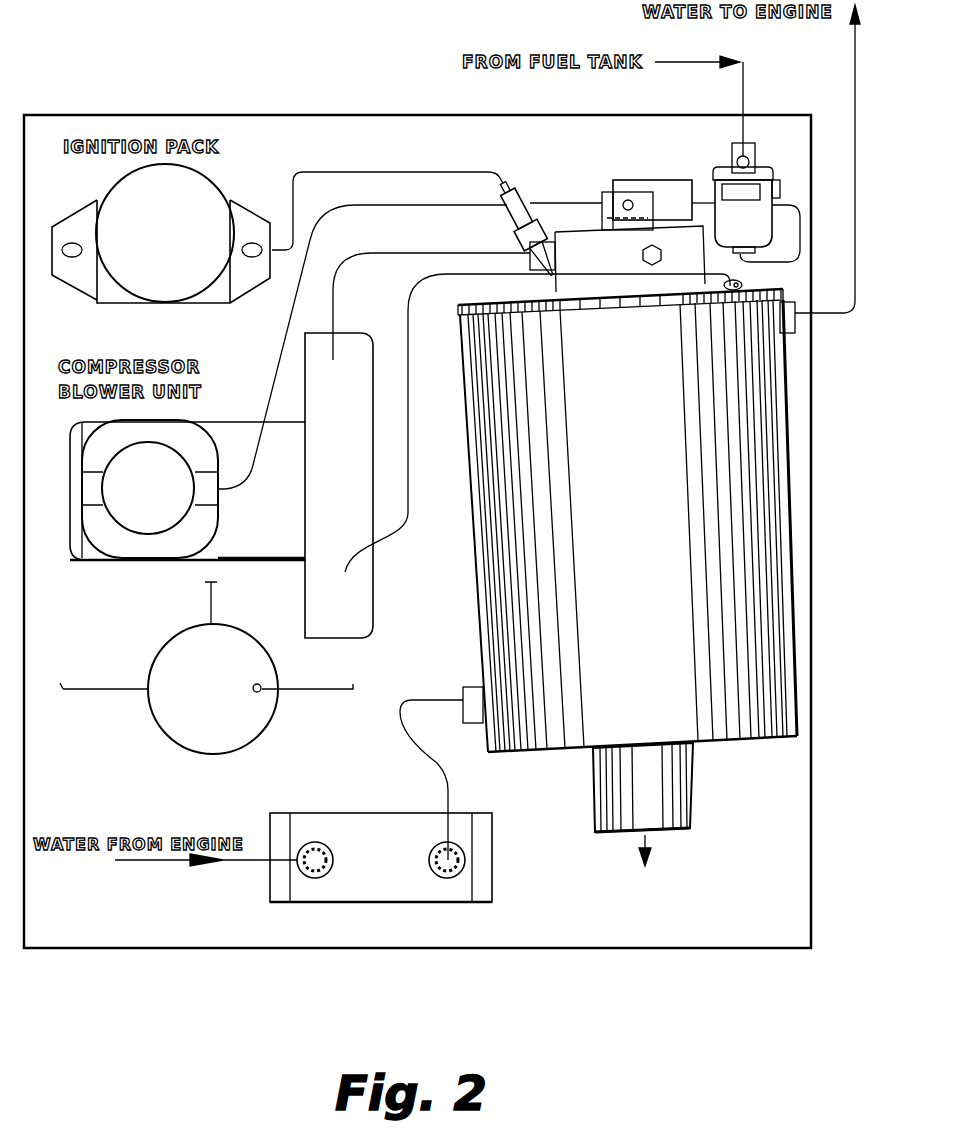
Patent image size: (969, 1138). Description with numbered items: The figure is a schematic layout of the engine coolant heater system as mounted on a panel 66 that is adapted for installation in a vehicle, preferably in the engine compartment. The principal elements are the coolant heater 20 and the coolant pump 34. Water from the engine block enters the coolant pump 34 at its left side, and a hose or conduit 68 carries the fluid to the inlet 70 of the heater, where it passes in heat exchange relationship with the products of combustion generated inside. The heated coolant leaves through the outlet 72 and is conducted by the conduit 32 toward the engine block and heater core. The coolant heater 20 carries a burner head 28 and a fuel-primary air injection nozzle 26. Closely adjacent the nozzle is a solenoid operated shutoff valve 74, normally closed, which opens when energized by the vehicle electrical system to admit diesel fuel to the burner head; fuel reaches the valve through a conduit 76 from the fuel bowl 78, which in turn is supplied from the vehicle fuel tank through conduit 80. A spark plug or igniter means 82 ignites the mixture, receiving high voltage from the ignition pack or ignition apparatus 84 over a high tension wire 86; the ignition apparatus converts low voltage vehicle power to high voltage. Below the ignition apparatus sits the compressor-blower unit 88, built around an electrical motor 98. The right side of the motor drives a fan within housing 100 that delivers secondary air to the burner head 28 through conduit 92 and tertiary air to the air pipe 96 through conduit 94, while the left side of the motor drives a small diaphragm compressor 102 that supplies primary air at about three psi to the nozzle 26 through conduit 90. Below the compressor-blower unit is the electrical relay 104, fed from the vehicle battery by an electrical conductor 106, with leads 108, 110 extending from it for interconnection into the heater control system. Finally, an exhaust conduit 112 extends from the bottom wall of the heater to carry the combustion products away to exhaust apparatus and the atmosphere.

The coolant heater 20 is at (755, 748).
The fuel-primary air injection nozzle 26 is at (602, 194).
The burner head 28 is at (598, 300).
The conduit 32 is at (833, 314).
The coolant pump 34 is at (330, 806).
The panel 66 is at (442, 458).
The hose or conduit 68 is at (432, 750).
The inlet 70 is at (470, 686).
The outlet 72 is at (788, 335).
The solenoid operated shutoff valve 74 is at (672, 187).
The conduit 76 is at (802, 222).
The fuel bowl 78 is at (772, 195).
The conduit 80 is at (743, 90).
The spark plug or igniter means 82 is at (512, 210).
The ignition pack or ignition apparatus 84 is at (232, 189).
The high tension wire 86 is at (425, 172).
The compressor-blower unit 88 is at (226, 426).
The conduit 90 is at (413, 207).
The conduit 92 is at (395, 257).
The conduit 94 is at (408, 357).
The air pipe 96 is at (706, 292).
The electrical motor 98 is at (280, 540).
The housing 100 is at (373, 606).
The compressor 102 is at (137, 517).
The electrical relay 104 is at (193, 754).
The electrical conductor 106 is at (98, 690).
The lead 108 is at (335, 688).
The lead 110 is at (210, 604).
The exhaust conduit 112 is at (697, 817).